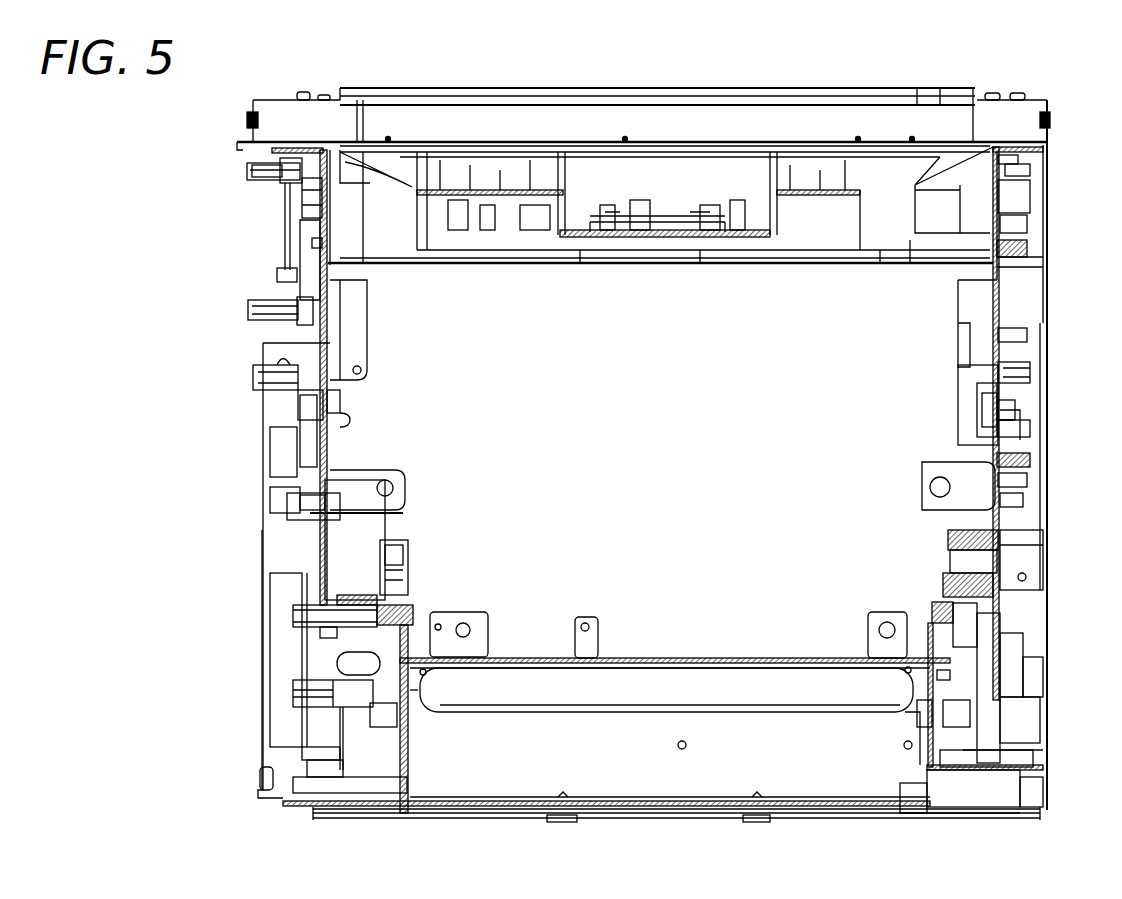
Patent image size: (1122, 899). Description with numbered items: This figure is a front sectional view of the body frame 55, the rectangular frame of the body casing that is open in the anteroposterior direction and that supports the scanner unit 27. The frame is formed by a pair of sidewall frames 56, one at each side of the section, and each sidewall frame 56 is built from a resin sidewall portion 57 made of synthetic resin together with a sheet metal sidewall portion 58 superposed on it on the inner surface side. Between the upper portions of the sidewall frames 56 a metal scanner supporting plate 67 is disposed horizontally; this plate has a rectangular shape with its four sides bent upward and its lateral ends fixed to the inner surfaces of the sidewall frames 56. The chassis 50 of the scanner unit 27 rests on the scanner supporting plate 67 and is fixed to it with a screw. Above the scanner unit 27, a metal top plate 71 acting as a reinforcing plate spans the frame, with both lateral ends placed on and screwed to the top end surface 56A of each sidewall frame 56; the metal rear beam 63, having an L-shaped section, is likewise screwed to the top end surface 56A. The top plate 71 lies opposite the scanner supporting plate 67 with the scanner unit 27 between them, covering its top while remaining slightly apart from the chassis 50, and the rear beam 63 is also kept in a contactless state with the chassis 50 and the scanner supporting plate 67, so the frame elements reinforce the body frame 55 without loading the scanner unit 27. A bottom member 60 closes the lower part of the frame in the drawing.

The scanner unit 27 is at (873, 172).
The chassis 50 is at (708, 232).
The body frame 55 is at (1060, 357).
The sidewall frame 56 is at (918, 367).
The top end surface 56A is at (1030, 180).
The resin sidewall portion 57 is at (980, 423).
The sheet metal sidewall portion 58 is at (990, 367).
The bottom plate 60 is at (648, 806).
The rear beam 63 is at (528, 90).
The scanner supporting plate 67 is at (628, 264).
The top plate 71 is at (606, 140).